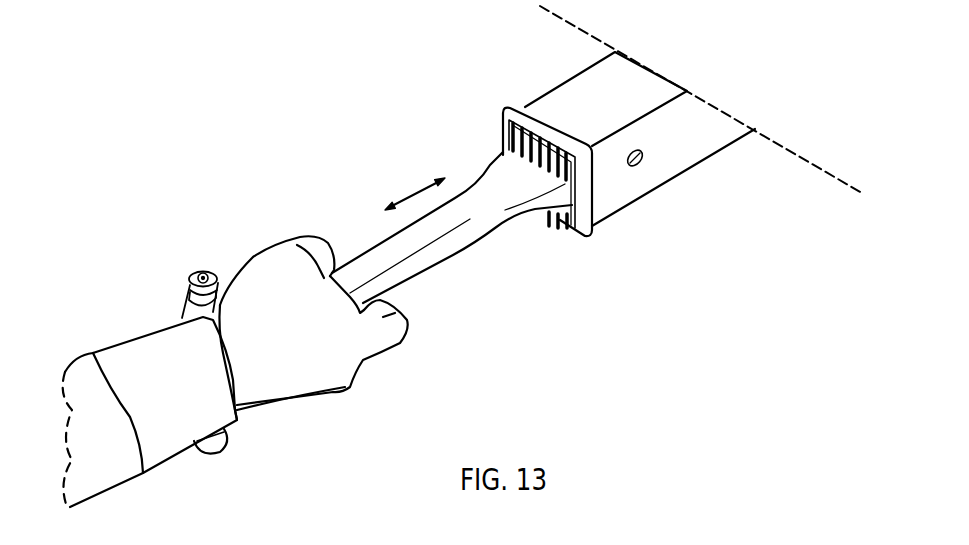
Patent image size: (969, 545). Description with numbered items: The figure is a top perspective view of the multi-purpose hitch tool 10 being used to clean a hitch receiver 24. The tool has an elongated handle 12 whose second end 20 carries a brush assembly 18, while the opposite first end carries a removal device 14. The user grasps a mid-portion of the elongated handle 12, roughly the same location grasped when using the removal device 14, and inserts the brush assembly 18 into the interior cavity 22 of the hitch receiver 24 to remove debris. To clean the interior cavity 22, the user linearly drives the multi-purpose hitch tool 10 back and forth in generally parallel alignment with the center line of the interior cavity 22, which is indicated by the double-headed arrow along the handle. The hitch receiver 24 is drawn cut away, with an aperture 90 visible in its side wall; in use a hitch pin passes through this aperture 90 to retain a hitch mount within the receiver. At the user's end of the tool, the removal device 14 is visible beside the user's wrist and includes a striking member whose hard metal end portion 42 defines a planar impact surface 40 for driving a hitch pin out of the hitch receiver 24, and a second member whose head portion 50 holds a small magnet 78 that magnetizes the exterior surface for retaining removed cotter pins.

The multi-purpose hitch tool 10 is at (380, 230).
The elongated handle 12 is at (437, 254).
The removal device 14 is at (178, 300).
The brush assembly 18 is at (550, 232).
The second end 20 is at (480, 158).
The interior cavity 22 is at (503, 126).
The hitch receiver 24 is at (582, 87).
The planar impact surface 40 is at (213, 453).
The end portion 42 is at (227, 436).
The head portion 50 is at (212, 282).
The magnet 78 is at (202, 273).
The aperture 90 is at (643, 161).